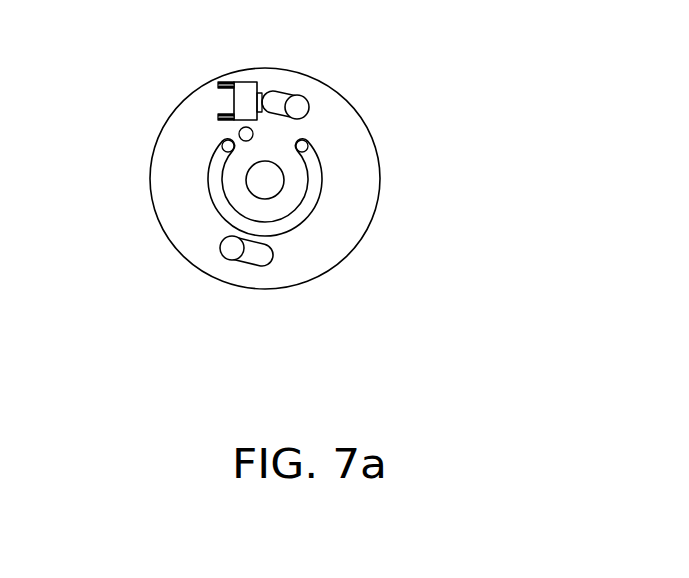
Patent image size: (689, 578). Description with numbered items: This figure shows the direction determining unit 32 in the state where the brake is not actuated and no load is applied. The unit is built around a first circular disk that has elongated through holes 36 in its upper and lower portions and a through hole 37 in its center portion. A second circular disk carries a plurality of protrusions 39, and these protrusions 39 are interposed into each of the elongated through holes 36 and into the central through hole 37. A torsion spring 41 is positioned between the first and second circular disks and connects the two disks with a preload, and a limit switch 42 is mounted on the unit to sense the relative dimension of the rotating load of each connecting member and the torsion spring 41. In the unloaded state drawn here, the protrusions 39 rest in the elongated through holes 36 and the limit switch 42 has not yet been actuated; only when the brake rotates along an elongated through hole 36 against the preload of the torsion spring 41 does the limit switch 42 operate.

The direction determining unit 32 is at (430, 275).
The elongated through holes 36 is at (290, 93).
The through hole 37 is at (247, 168).
The protrusions 39 is at (297, 108).
The torsion spring 41 is at (313, 183).
The limit switch 42 is at (240, 82).